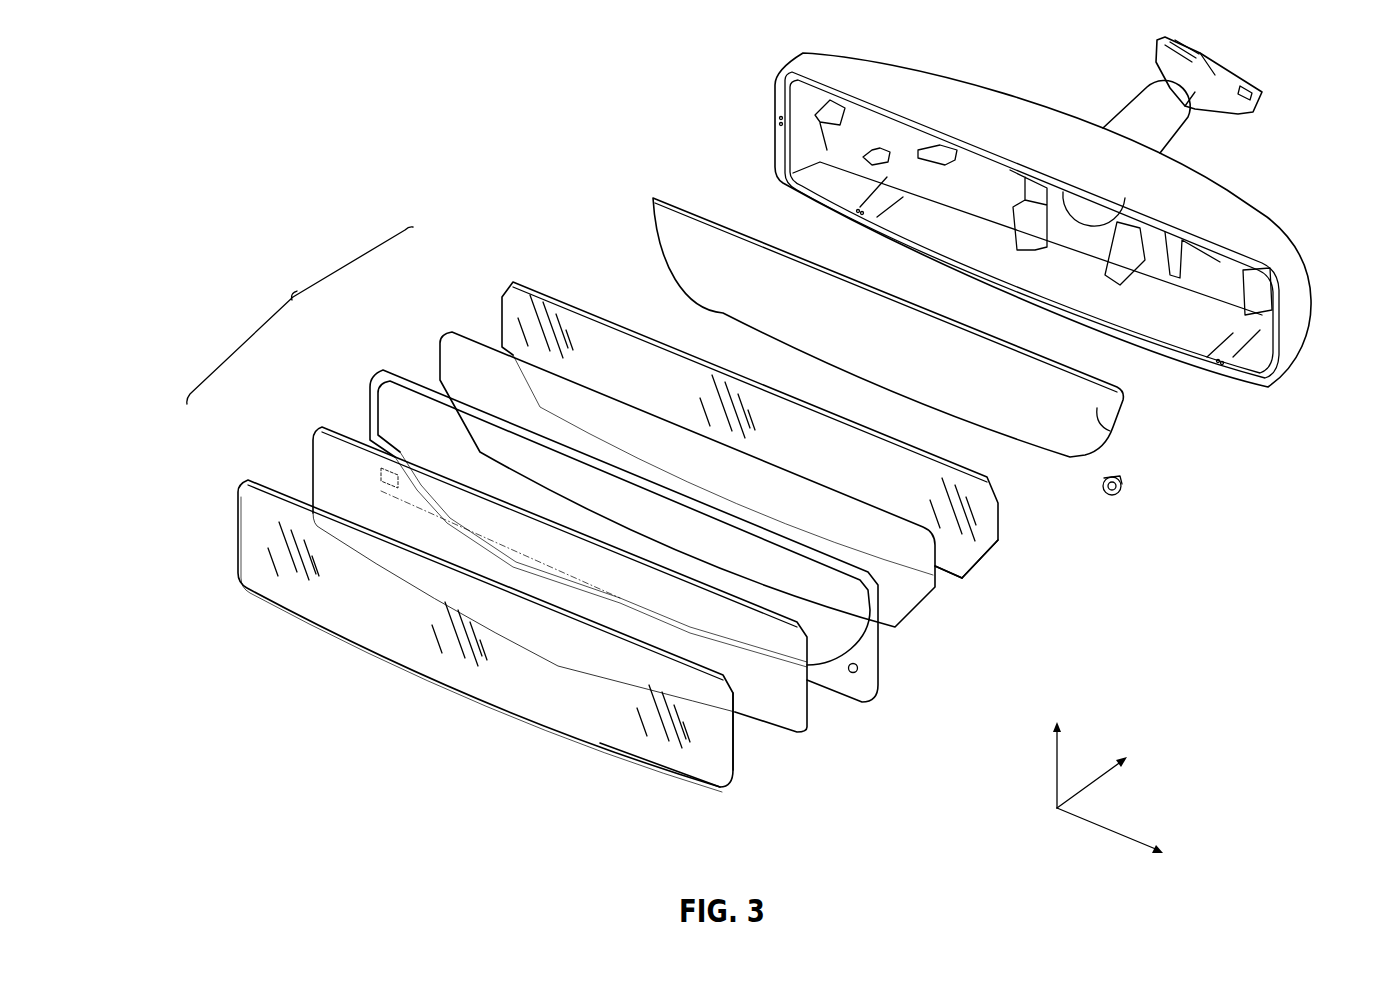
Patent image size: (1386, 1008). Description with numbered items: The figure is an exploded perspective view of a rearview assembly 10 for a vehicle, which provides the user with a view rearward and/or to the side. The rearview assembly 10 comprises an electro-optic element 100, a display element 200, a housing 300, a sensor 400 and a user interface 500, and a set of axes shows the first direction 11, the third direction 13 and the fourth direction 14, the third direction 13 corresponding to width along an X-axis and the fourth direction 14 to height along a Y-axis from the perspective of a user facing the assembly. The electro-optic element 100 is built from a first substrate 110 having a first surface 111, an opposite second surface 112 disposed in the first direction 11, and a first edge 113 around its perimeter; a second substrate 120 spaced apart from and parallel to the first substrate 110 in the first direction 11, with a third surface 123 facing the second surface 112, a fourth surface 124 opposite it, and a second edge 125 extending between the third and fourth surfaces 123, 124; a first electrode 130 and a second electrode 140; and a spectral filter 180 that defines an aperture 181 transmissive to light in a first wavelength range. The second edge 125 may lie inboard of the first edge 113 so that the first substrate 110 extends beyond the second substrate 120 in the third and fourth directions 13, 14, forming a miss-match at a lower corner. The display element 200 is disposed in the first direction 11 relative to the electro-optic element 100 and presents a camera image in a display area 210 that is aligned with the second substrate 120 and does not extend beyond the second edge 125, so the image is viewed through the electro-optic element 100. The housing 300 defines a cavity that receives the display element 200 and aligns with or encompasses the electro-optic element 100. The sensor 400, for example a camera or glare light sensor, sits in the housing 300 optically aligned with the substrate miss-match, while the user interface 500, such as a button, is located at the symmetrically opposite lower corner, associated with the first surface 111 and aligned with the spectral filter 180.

The rearview assembly 10 is at (303, 130).
The first direction 11 is at (1104, 769).
The third direction 13 is at (1123, 841).
The fourth direction 14 is at (1057, 747).
The electro-optic element 100 is at (293, 297).
The first substrate 110 is at (538, 617).
The first surface 111 is at (713, 763).
The second surface 112 is at (717, 737).
The first edge 113 is at (733, 766).
The second substrate 120 is at (743, 445).
The third surface 123 is at (957, 562).
The fourth surface 124 is at (980, 512).
The second edge 125 is at (982, 552).
The first electrode 130 is at (320, 428).
The second electrode 140 is at (445, 330).
The spectral filter 180 is at (634, 513).
The aperture 181 is at (850, 677).
The display element 200 is at (926, 301).
The display area 210 is at (1110, 431).
The housing 300 is at (866, 53).
The sensor 400 is at (1120, 476).
The user interface 500 is at (378, 479).